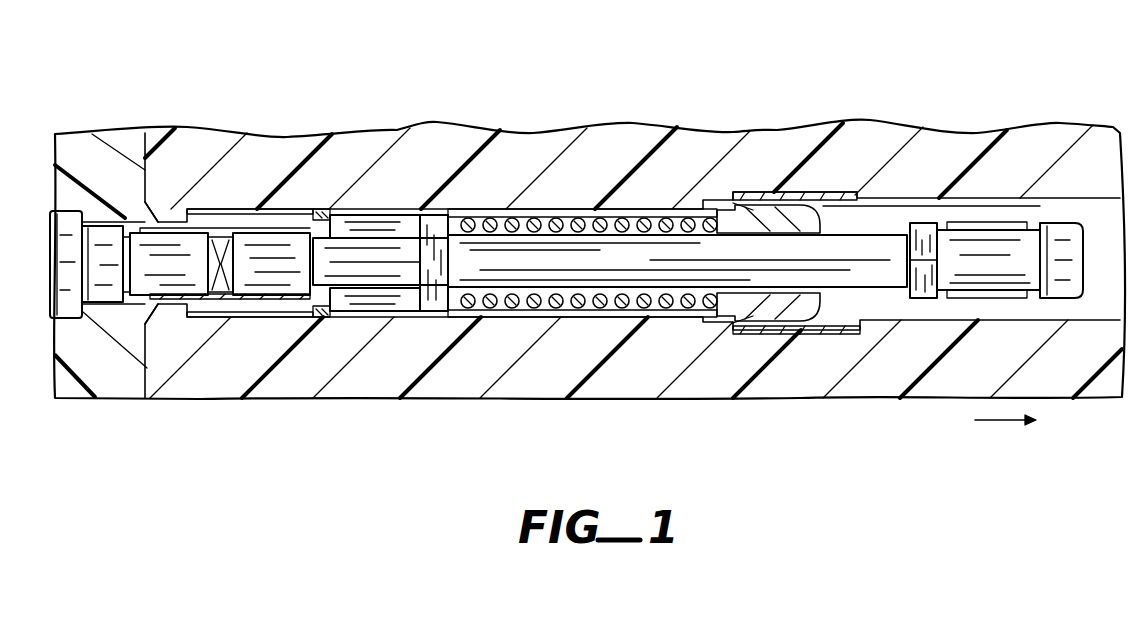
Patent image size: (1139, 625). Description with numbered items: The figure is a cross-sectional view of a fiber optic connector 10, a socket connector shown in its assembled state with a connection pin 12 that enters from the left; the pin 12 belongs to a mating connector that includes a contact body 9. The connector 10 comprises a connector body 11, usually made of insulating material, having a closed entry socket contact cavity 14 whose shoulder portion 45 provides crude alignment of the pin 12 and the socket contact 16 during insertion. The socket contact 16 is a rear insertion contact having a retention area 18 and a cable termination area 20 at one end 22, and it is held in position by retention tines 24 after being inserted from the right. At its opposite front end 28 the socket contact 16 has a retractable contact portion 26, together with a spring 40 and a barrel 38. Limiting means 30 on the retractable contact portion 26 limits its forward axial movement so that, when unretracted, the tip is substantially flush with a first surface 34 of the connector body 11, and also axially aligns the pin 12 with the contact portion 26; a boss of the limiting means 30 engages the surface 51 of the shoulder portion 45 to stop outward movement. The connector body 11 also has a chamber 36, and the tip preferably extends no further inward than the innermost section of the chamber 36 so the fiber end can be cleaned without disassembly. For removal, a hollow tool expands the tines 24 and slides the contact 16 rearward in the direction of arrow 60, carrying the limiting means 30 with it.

The contact body 9 is at (87, 358).
The fiber optic connector 10 is at (589, 264).
The connector body 11 is at (940, 157).
The connection pin 12 is at (150, 257).
The socket contact cavity 14 is at (590, 318).
The socket contact 16 is at (505, 256).
The retention area 18 is at (760, 330).
The cable termination area 20 is at (997, 222).
The end of the socket contact 22 is at (1055, 296).
The retention tines 24 is at (810, 192).
The retractable contact portion 26 is at (320, 302).
The front end of the socket contact 28 is at (383, 286).
The limiting means 30 is at (281, 222).
The first surface of the connector body 34 is at (140, 370).
The chamber 36 is at (140, 203).
The barrel 38 is at (578, 212).
The spring 40 is at (700, 318).
The shoulder portion 45 is at (236, 305).
The surface of the shoulder portion 51 is at (187, 220).
The arrow 60 is at (1001, 422).